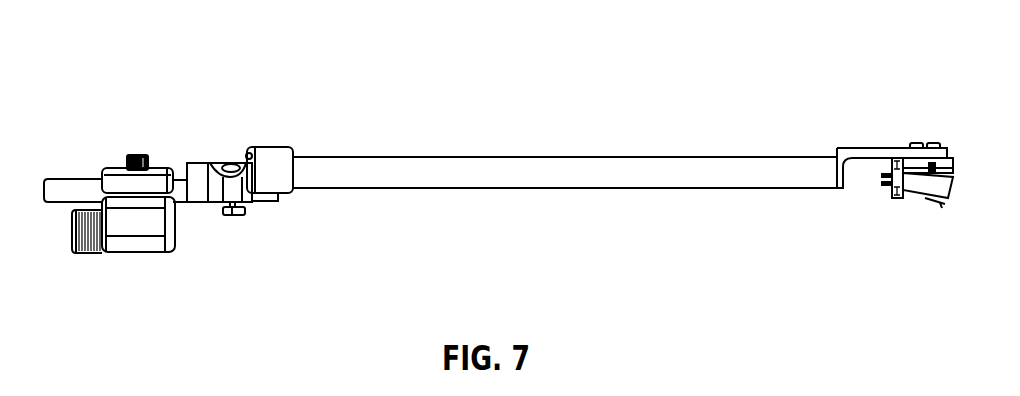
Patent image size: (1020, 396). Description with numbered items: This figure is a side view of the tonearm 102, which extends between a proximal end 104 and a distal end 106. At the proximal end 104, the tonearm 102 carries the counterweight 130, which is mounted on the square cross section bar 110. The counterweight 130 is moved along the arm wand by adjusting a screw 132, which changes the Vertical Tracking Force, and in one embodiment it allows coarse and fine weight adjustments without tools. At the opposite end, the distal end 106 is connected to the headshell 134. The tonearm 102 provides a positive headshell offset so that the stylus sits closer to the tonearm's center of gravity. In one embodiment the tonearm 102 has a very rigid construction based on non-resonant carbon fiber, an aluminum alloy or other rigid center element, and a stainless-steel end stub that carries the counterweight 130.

The tonearm 102 is at (552, 178).
The proximal end 104 is at (325, 178).
The distal end 106 is at (810, 178).
The square cross section bar 110 is at (65, 178).
The counterweight 130 is at (138, 252).
The screw 132 is at (138, 156).
The headshell 134 is at (867, 147).